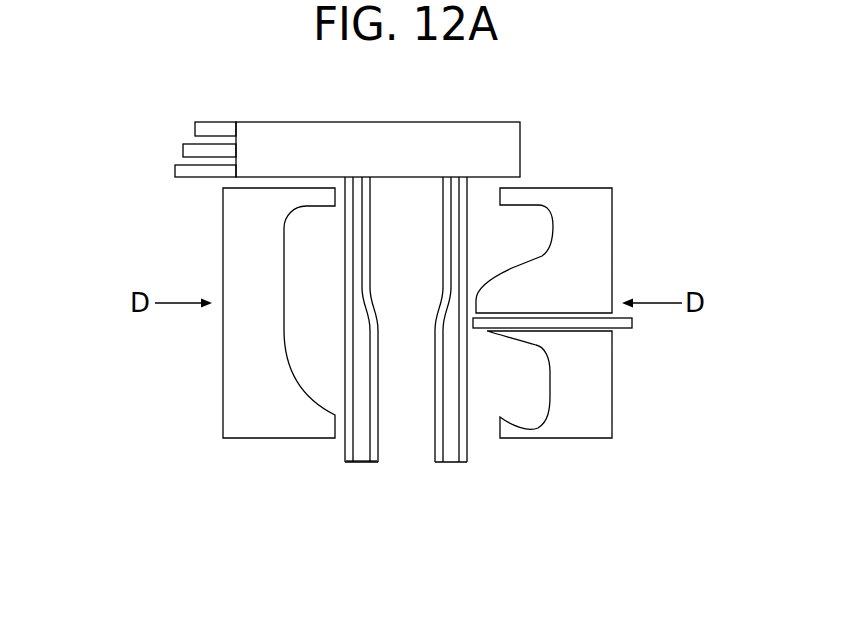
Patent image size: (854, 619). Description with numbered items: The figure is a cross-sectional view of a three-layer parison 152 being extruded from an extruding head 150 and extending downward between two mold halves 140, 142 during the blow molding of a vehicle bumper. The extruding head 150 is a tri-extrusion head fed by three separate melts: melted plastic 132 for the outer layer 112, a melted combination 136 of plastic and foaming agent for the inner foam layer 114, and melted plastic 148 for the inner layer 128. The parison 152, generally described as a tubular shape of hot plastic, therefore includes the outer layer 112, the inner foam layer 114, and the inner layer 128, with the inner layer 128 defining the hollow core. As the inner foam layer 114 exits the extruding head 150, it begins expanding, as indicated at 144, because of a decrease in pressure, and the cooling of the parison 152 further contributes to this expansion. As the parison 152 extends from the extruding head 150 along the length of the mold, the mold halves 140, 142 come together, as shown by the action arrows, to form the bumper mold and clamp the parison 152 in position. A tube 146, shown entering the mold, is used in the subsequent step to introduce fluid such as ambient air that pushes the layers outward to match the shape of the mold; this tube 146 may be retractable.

The outer layer 112 is at (345, 450).
The inner foam layer 114 is at (361, 462).
The inner layer 128 is at (380, 398).
The melted plastic 132 is at (190, 144).
The melted combination of plastic and foaming agent 136 is at (187, 178).
The mold half 140 is at (223, 405).
The mold half 142 is at (612, 400).
The expansion of inner foam layer 144 is at (372, 428).
The tube 146 is at (622, 330).
The melted plastic 148 is at (202, 122).
The extruding head 150 is at (290, 122).
The parison 152 is at (334, 335).